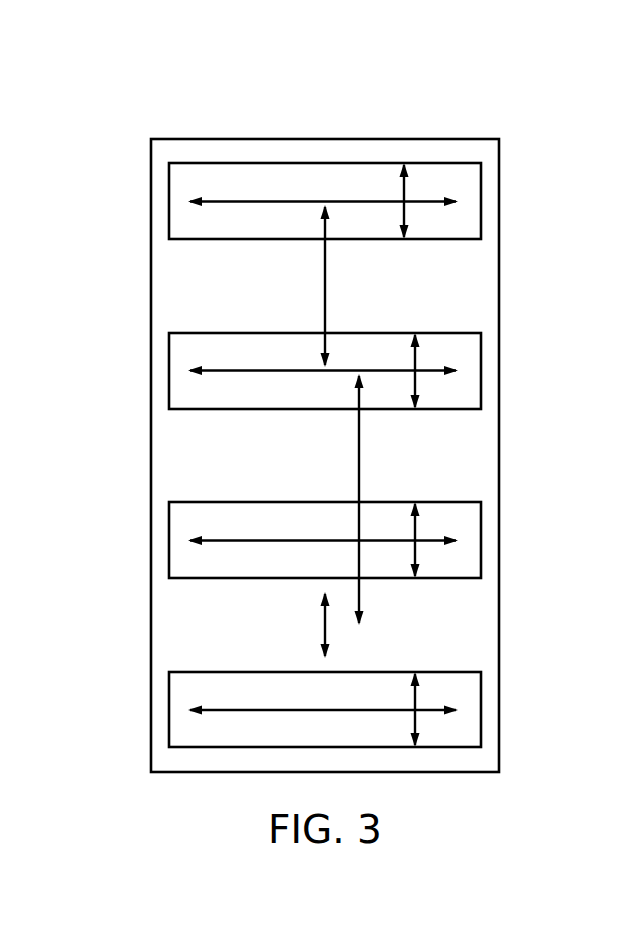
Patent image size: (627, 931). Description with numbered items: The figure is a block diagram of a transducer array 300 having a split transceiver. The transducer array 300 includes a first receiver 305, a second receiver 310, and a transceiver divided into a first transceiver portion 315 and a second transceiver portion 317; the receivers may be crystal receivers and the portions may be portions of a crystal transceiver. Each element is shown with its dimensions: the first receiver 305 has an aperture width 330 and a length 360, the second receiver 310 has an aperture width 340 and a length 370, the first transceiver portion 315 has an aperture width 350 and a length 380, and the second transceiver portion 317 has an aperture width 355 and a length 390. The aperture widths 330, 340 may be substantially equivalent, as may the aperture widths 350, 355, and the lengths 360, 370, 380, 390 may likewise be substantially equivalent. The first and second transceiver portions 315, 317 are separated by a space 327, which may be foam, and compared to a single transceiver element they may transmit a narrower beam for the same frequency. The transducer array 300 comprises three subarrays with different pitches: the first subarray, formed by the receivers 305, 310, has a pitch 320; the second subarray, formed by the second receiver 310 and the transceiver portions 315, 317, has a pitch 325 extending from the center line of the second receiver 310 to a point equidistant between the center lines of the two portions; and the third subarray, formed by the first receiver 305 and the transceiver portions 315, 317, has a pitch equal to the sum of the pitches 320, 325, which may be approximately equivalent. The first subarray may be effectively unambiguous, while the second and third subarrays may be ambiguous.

The transducer array 300 is at (430, 70).
The first receiver 305 is at (481, 212).
The second receiver 310 is at (481, 381).
The first transceiver portion 315 is at (481, 550).
The second transceiver portion 317 is at (481, 720).
The pitch 320 is at (325, 283).
The pitch 325 is at (359, 452).
The space 327 is at (323, 623).
The aperture width 330 is at (407, 190).
The aperture width 340 is at (415, 360).
The aperture width 350 is at (415, 528).
The aperture width 355 is at (415, 697).
The length 360 is at (248, 201).
The length 370 is at (240, 370).
The length 380 is at (240, 540).
The length 390 is at (240, 710).